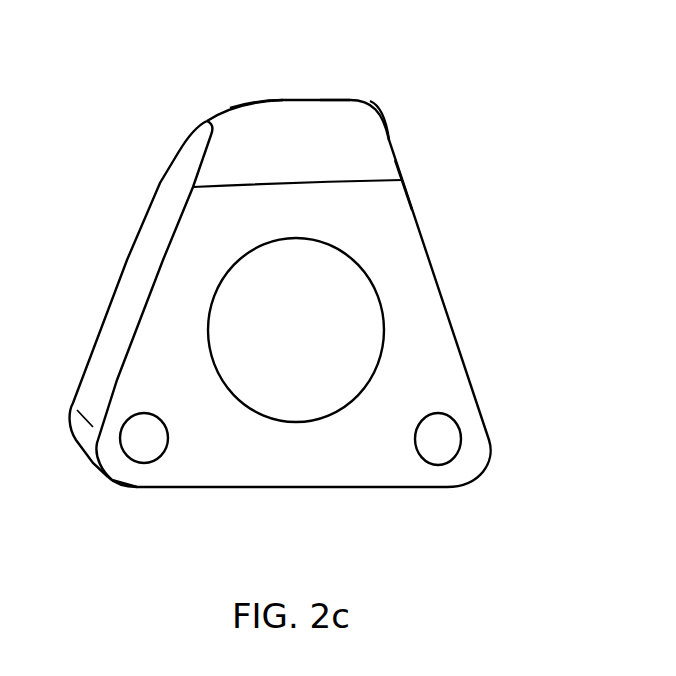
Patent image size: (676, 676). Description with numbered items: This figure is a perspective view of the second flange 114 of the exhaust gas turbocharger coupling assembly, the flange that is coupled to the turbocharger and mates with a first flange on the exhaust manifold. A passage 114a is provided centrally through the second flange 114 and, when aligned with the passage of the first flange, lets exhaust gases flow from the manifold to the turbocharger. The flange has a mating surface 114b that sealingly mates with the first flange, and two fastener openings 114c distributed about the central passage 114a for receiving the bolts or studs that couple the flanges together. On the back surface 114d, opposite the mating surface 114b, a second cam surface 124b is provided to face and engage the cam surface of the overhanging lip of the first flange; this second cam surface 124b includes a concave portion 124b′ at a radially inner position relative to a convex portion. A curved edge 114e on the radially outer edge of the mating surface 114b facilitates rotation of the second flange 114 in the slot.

The second flange 114 is at (416, 313).
The passage 114a is at (273, 335).
The mating surface 114b is at (150, 203).
The fastener openings 114c is at (140, 443).
The back surface 114d is at (393, 202).
The curved edge 114e is at (282, 99).
The second cam surface 124b is at (333, 122).
The concave portion 124b′ is at (402, 180).